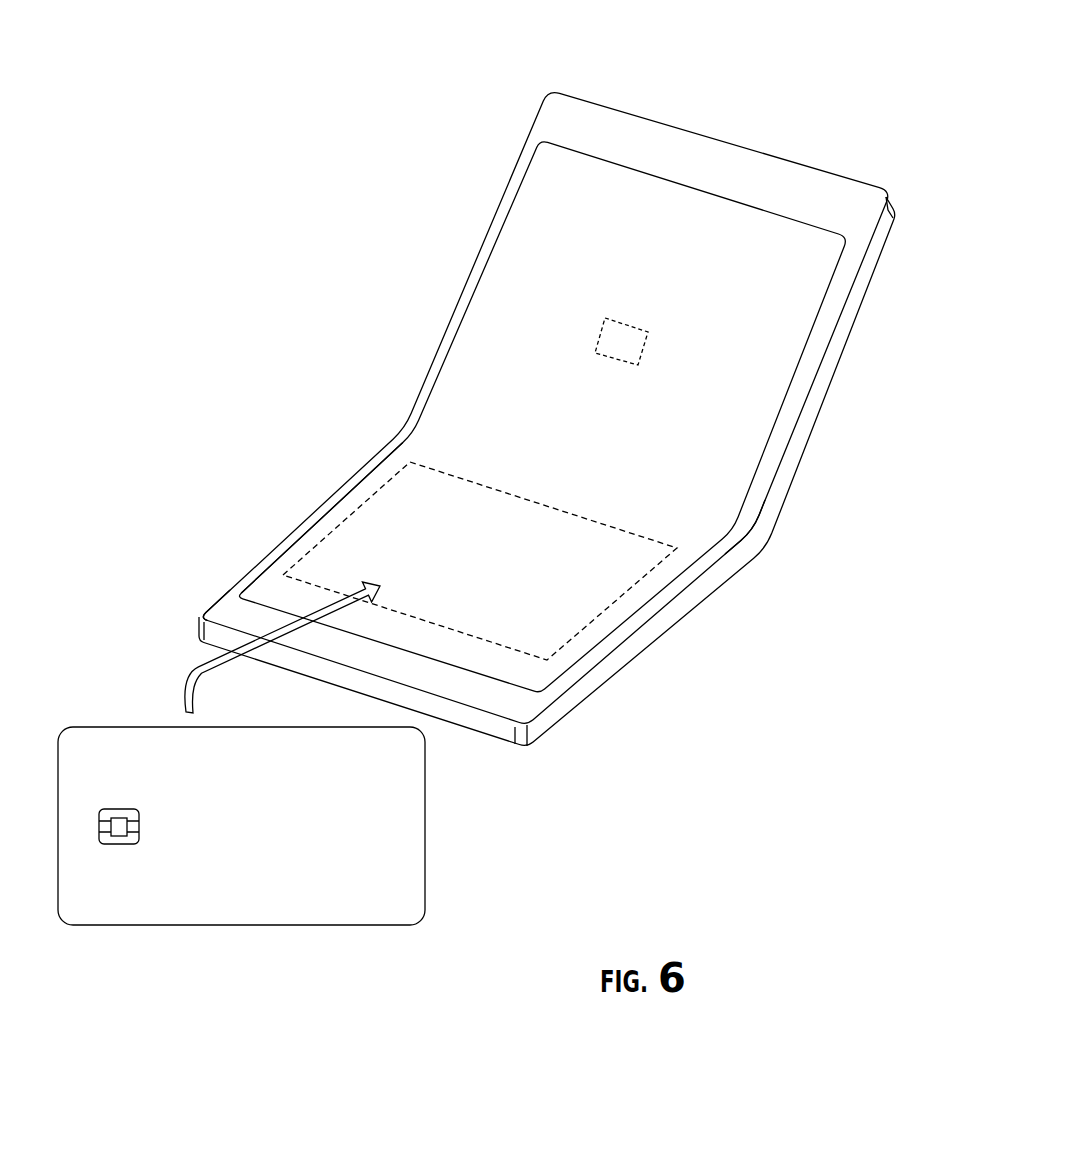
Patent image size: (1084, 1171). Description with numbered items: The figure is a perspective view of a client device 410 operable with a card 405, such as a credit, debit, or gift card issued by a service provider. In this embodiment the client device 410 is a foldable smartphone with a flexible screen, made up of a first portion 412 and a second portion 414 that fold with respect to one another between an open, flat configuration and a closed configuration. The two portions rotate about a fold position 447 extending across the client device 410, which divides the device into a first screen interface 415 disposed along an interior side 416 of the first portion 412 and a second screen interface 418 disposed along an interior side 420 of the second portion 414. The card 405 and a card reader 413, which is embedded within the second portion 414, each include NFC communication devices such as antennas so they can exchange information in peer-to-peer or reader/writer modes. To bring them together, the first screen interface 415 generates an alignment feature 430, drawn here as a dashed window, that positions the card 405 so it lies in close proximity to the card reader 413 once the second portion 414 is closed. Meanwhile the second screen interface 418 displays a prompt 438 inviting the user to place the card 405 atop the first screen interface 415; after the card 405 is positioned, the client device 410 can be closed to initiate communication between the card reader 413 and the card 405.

The card 405 is at (408, 854).
The client device 410 is at (735, 86).
The first portion 412 is at (638, 645).
The card reader 413 is at (600, 334).
The second portion 414 is at (866, 283).
The first screen interface 415 is at (322, 527).
The interior side 416 is at (217, 612).
The second screen interface 418 is at (765, 371).
The interior side 420 is at (558, 98).
The alignment feature 430 is at (630, 585).
The prompt 438 is at (550, 215).
The fold position 447 is at (667, 513).